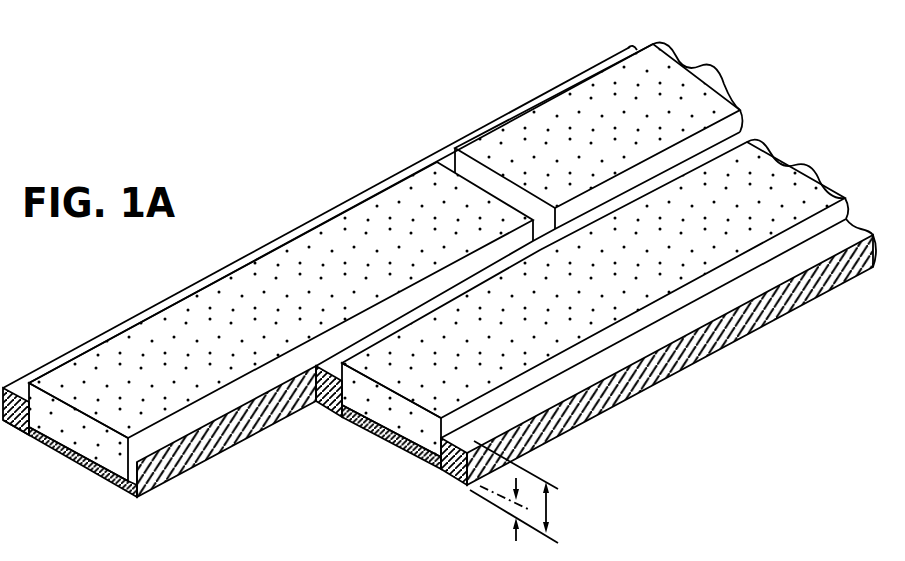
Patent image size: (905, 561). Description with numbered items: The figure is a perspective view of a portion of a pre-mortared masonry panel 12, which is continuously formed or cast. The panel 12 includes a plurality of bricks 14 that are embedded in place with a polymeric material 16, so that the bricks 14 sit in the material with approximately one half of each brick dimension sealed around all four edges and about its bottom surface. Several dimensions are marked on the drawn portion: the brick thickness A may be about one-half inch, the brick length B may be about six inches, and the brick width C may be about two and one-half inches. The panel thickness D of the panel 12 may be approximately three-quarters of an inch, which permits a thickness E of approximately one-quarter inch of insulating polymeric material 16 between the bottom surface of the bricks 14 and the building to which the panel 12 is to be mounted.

The pre-mortared masonry panel 12 is at (833, 297).
The bricks 14 is at (410, 205).
The polymeric material 16 is at (360, 424).
The brick thickness A is at (22, 382).
The brick length B is at (282, 244).
The brick width C is at (85, 442).
The panel thickness D is at (550, 510).
The polymeric material thickness E is at (508, 510).